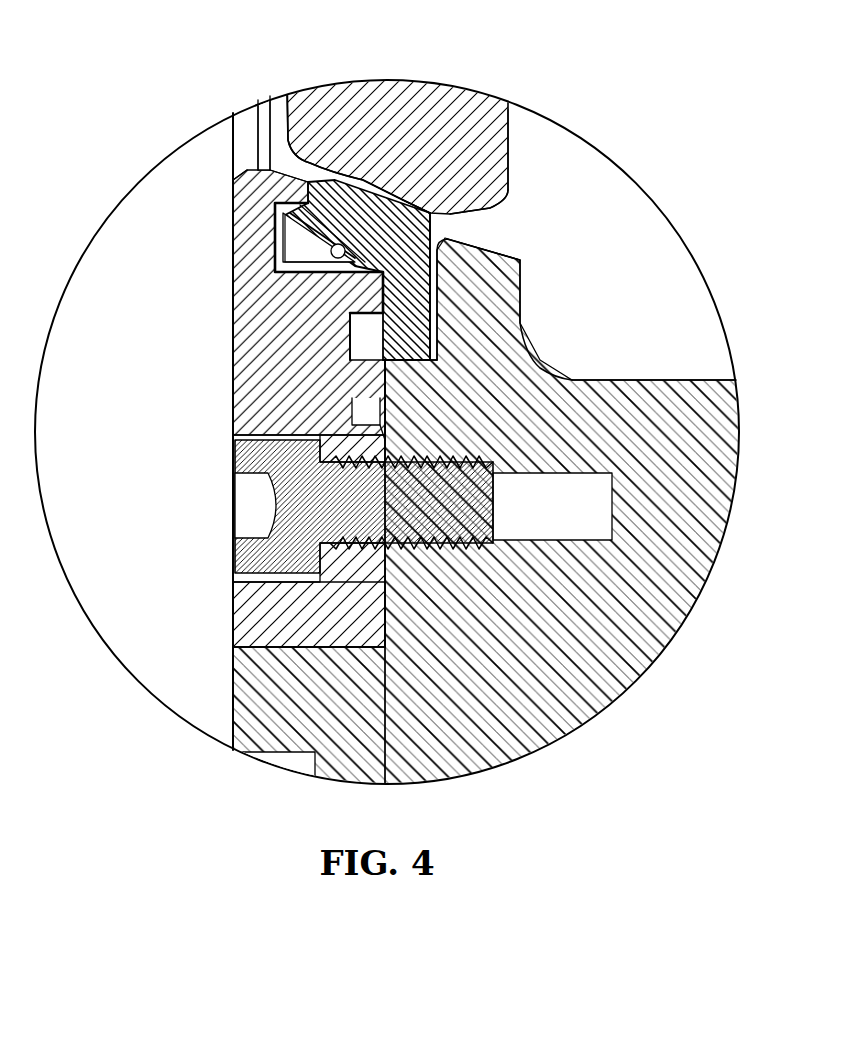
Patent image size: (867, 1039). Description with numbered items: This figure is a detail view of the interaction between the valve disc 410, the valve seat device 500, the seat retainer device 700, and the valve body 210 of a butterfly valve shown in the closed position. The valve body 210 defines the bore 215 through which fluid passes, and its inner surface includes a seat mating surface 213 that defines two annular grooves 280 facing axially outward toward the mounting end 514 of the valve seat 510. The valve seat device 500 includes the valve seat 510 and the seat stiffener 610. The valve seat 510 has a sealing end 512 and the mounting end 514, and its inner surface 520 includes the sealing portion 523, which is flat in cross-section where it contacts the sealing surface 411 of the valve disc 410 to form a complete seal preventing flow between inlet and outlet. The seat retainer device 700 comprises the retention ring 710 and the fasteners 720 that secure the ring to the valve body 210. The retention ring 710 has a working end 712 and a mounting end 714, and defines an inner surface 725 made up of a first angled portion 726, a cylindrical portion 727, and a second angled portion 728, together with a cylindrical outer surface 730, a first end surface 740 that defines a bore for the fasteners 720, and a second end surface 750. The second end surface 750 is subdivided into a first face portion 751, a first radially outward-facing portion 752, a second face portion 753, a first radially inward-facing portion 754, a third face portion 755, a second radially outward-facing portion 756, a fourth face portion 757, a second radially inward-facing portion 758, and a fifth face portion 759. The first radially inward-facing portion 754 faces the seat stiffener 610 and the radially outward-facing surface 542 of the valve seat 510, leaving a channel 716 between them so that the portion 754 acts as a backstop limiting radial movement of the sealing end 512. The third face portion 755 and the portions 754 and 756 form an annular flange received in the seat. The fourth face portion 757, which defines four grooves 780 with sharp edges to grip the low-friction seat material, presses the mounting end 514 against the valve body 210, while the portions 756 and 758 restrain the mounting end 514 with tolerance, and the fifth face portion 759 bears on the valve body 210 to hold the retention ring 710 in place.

The valve body 210 is at (637, 402).
The seat mating surface 213 is at (378, 587).
The bore 215 is at (493, 252).
The grooves 280 is at (388, 388).
The valve disc 410 is at (510, 150).
The sealing surface 411 is at (378, 278).
The valve seat device 500 is at (432, 292).
The valve seat 510 is at (283, 253).
The sealing end 512 is at (508, 193).
The mounting end 514 is at (386, 443).
The inner surface 520 is at (376, 183).
The sealing portion 523 is at (470, 150).
The radially outward-facing surface 542 is at (300, 265).
The seat stiffener 610 is at (418, 192).
The seat retainer device 700 is at (233, 622).
The retention ring 710 is at (232, 413).
The working end 712 is at (252, 263).
The mounting end 714 is at (290, 612).
The channel 716 is at (360, 228).
The fasteners 720 is at (236, 452).
The inner surface 725 is at (248, 135).
The first angled portion 726 is at (238, 160).
The cylindrical portion 727 is at (263, 120).
The second angled portion 728 is at (253, 112).
The outer surface 730 is at (341, 654).
The first end surface 740 is at (229, 296).
The second end surface 750 is at (392, 574).
The first face portion 751 is at (278, 148).
The first radially outward-facing portion 752 is at (322, 200).
The second face portion 753 is at (290, 243).
The first radially inward-facing portion 754 is at (343, 240).
The third face portion 755 is at (400, 297).
The second radially outward-facing portion 756 is at (388, 333).
The fourth face portion 757 is at (385, 364).
The second radially inward-facing portion 758 is at (392, 404).
The fifth face portion 759 is at (393, 622).
The grooves 780 is at (352, 405).